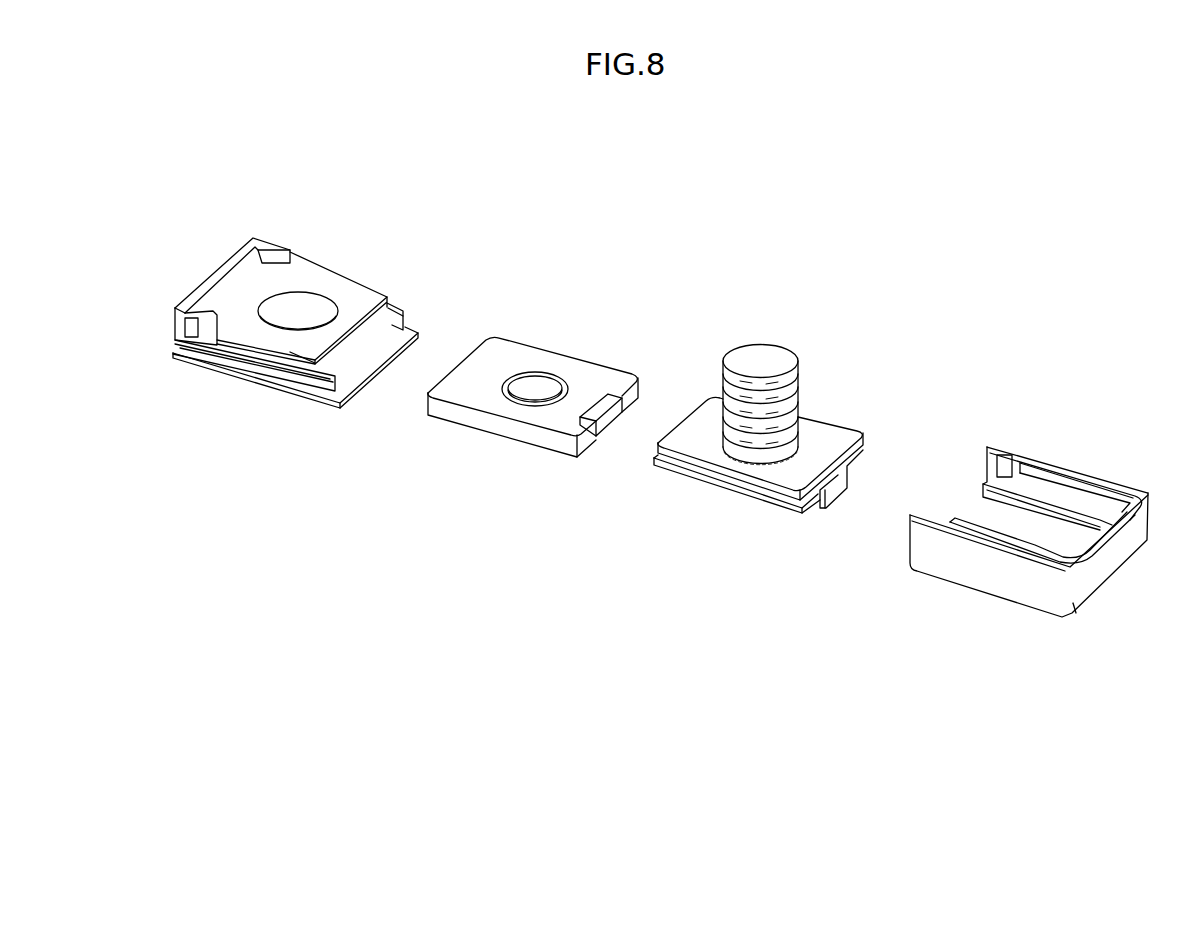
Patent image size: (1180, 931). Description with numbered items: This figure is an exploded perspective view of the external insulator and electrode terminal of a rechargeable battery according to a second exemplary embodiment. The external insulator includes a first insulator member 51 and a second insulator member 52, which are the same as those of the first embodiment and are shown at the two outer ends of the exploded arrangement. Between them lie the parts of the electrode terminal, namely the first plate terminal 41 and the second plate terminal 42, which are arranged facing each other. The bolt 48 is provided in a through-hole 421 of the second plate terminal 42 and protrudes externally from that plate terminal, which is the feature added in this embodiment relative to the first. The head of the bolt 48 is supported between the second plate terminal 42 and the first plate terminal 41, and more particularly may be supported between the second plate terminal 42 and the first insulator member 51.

The first insulator member 51 is at (221, 253).
The first plate terminal 41 is at (520, 355).
The second plate terminal 42 is at (712, 451).
The bolt 48 is at (767, 356).
The through-hole 421 is at (768, 466).
The second insulator member 52 is at (1067, 459).